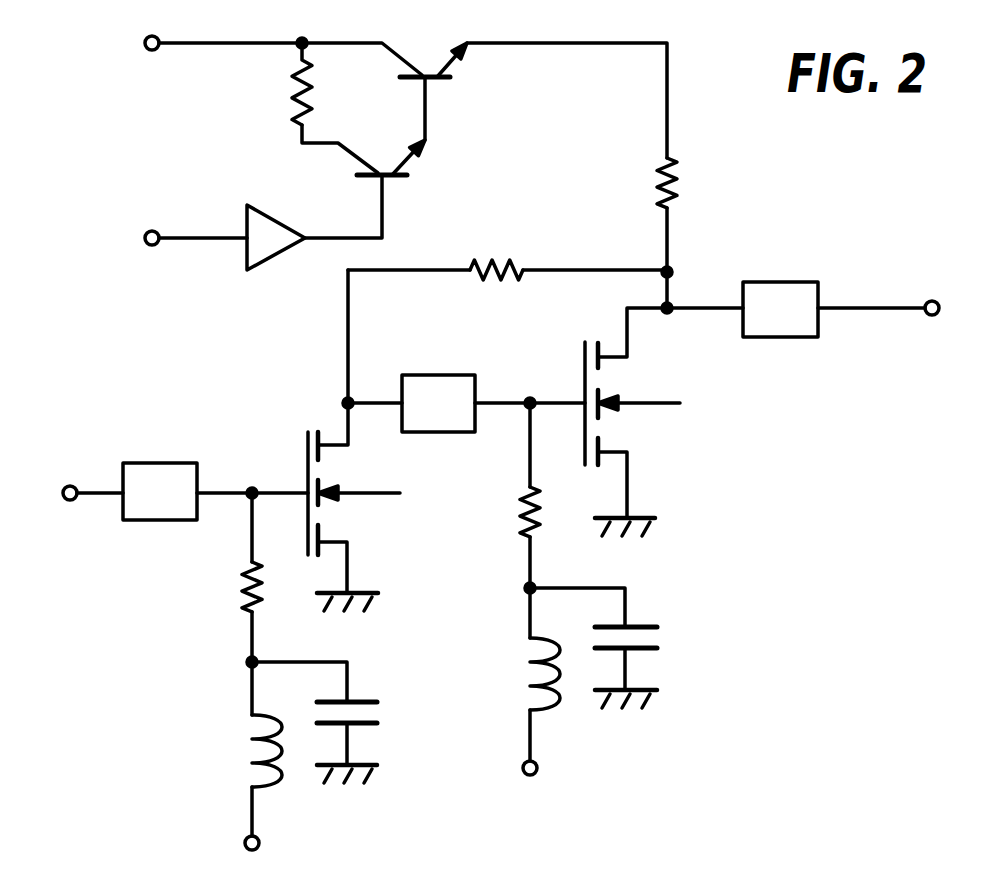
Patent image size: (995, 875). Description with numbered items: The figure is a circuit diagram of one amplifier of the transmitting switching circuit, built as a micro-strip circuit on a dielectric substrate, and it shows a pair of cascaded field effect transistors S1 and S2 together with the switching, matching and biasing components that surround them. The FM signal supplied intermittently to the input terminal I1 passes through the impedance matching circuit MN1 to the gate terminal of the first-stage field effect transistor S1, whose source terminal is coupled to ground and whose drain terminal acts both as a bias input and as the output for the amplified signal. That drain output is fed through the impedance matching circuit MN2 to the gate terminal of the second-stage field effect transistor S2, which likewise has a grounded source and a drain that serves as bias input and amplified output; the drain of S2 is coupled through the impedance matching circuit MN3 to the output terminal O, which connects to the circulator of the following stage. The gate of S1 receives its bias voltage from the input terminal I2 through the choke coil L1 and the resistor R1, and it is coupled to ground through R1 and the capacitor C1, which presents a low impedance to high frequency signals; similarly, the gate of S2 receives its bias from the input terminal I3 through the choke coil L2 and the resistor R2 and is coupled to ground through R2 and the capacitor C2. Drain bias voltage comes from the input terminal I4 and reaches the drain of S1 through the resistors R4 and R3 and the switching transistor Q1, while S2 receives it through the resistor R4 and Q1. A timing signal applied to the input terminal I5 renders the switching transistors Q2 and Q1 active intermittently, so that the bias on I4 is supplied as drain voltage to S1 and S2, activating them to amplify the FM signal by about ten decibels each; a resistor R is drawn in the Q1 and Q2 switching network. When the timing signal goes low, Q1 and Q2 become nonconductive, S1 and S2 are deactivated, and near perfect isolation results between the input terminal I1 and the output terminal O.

The input terminal I1 is at (73, 487).
The input terminal I2 is at (260, 842).
The input terminal I3 is at (538, 767).
The input terminal I4 is at (144, 42).
The input terminal I5 is at (148, 232).
The output terminal O is at (926, 301).
The impedance matching circuit MN1 is at (160, 491).
The impedance matching circuit MN2 is at (438, 403).
The impedance matching circuit MN3 is at (780, 309).
The field effect transistor S1 is at (334, 517).
The field effect transistor S2 is at (611, 422).
The resistor R is at (286, 84).
The resistor R1 is at (234, 587).
The resistor R2 is at (508, 512).
The resistor R3 is at (496, 250).
The resistor R4 is at (685, 183).
The capacitor C1 is at (367, 729).
The capacitor C2 is at (645, 654).
The choke coil L1 is at (246, 751).
The choke coil L2 is at (521, 674).
The switching transistor Q1 is at (433, 74).
The switching transistor Q2 is at (411, 164).